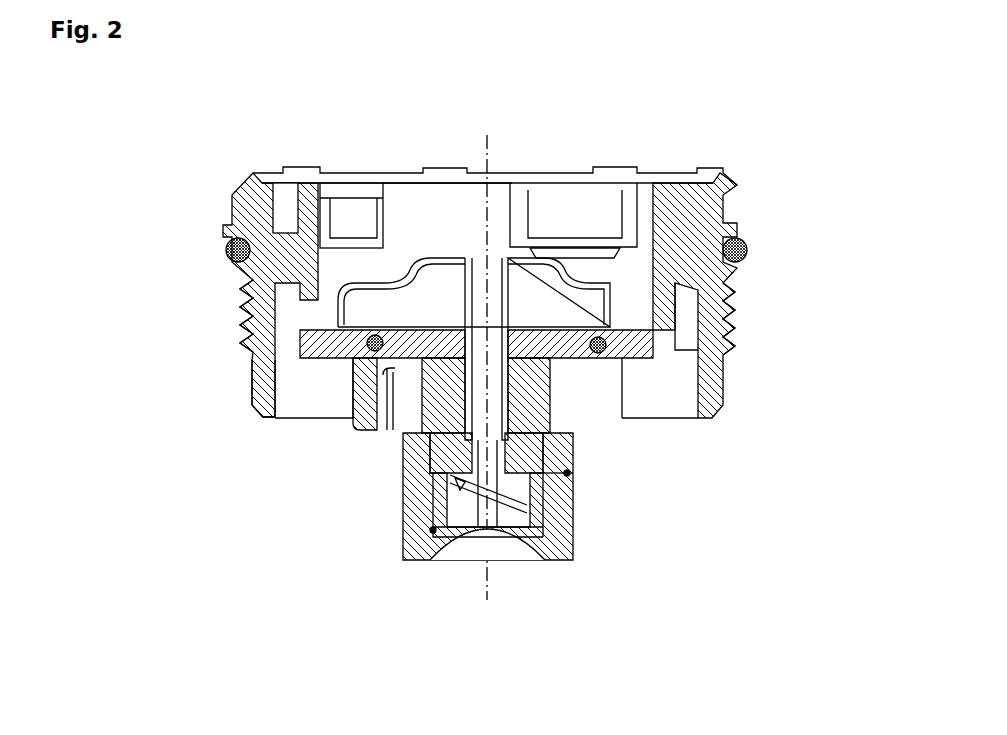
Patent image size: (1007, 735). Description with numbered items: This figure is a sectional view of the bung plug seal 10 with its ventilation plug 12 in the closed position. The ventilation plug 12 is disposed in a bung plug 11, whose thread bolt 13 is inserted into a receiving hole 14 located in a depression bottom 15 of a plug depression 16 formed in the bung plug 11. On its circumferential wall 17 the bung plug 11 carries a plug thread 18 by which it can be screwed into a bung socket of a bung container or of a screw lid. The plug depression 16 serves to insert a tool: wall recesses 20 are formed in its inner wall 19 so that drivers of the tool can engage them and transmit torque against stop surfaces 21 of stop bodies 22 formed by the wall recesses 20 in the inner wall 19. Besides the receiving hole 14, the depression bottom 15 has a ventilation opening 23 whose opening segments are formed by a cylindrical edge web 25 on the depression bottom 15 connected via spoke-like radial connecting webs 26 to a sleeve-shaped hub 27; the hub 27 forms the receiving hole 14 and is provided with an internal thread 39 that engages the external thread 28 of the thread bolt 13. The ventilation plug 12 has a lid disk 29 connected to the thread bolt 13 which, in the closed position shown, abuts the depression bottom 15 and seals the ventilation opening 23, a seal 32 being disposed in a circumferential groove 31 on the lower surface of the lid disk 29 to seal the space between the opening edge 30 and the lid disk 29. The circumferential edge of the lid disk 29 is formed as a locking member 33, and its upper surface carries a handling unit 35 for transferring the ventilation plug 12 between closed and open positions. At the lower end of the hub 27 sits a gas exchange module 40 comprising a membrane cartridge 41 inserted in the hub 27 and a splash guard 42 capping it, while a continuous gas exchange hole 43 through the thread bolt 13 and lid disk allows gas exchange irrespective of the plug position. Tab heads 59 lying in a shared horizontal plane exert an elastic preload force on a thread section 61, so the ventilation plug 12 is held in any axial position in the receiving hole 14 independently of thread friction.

The bung plug seal 10 is at (770, 130).
The bung plug 11 is at (735, 288).
The ventilation plug 12 is at (537, 263).
The thread bolt 13 is at (520, 435).
The receiving hole 14 is at (505, 462).
The depression bottom 15 is at (723, 352).
The plug depression 16 is at (433, 178).
The circumferential wall 17 is at (250, 368).
The plug thread 18 is at (238, 310).
The inner wall 19 is at (597, 178).
The wall recesses 20 is at (337, 213).
The stop surfaces 21 is at (373, 220).
The stop bodies 22 is at (497, 165).
The ventilation opening 23 is at (378, 452).
The cylindrical edge web 25 is at (387, 367).
The radial connecting webs 26 is at (397, 417).
The hub 27 is at (545, 520).
The external thread 28 is at (540, 395).
The lid disk 29 is at (606, 340).
The opening edge 30 is at (252, 192).
The circumferential groove 31 is at (373, 348).
The seal 32 is at (353, 358).
The locking member 33 is at (250, 275).
The handling unit 35 is at (503, 248).
The internal thread 39 is at (622, 372).
The gas exchange module 40 is at (413, 570).
The membrane cartridge 41 is at (433, 530).
The splash guard 42 is at (525, 520).
The gas exchange hole 43 is at (487, 560).
The tab heads 59 is at (548, 527).
The thread section 61 is at (530, 445).